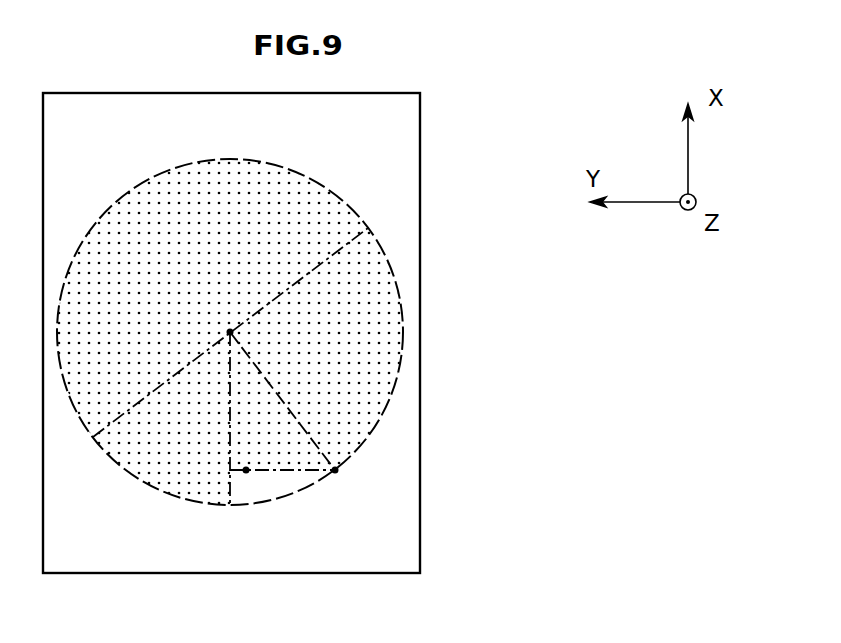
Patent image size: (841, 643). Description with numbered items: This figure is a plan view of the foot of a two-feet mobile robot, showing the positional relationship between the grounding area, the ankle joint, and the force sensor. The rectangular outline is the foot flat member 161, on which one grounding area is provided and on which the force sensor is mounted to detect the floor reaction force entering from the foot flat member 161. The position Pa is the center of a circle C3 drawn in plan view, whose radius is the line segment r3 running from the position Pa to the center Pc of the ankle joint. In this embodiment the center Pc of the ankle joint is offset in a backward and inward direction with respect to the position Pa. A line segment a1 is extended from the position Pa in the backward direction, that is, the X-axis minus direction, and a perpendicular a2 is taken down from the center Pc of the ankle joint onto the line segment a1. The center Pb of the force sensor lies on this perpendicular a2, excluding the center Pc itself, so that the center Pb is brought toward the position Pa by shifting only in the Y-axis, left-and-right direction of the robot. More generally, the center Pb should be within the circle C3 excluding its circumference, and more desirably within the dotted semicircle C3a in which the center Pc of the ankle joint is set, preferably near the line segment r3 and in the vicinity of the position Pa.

The foot flat member 161 is at (402, 151).
The circle C3 is at (380, 247).
The semicircle C3a is at (373, 380).
The position Pa is at (230, 329).
The center of force sensor Pb is at (247, 468).
The center of ankle joint Pc is at (338, 472).
The line segment r3 is at (265, 378).
The line segment a1 is at (230, 400).
The perpendicular a2 is at (298, 467).